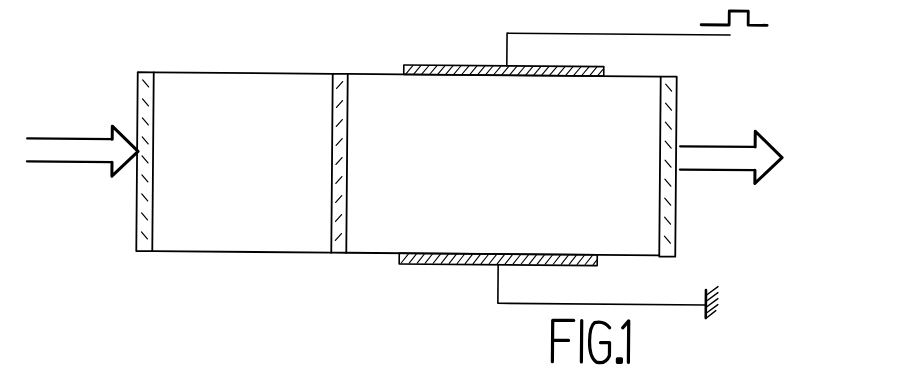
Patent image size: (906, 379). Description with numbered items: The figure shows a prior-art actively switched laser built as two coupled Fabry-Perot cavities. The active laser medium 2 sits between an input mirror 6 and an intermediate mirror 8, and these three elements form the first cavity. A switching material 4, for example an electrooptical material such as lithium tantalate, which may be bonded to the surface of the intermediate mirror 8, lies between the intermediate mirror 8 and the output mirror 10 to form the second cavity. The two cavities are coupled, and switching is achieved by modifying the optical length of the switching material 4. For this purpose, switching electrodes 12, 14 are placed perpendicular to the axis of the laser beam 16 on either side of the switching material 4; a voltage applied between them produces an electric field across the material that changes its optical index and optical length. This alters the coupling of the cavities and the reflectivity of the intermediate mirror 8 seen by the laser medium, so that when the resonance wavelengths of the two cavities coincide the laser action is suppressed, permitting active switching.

The active laser medium 2 is at (213, 244).
The switching material 4 is at (390, 240).
The input mirror 6 is at (137, 234).
The intermediate mirror 8 is at (333, 240).
The output mirror 10 is at (668, 232).
The switching electrode 12 is at (473, 264).
The switching electrode 14 is at (452, 67).
The laser beam 16 is at (706, 150).